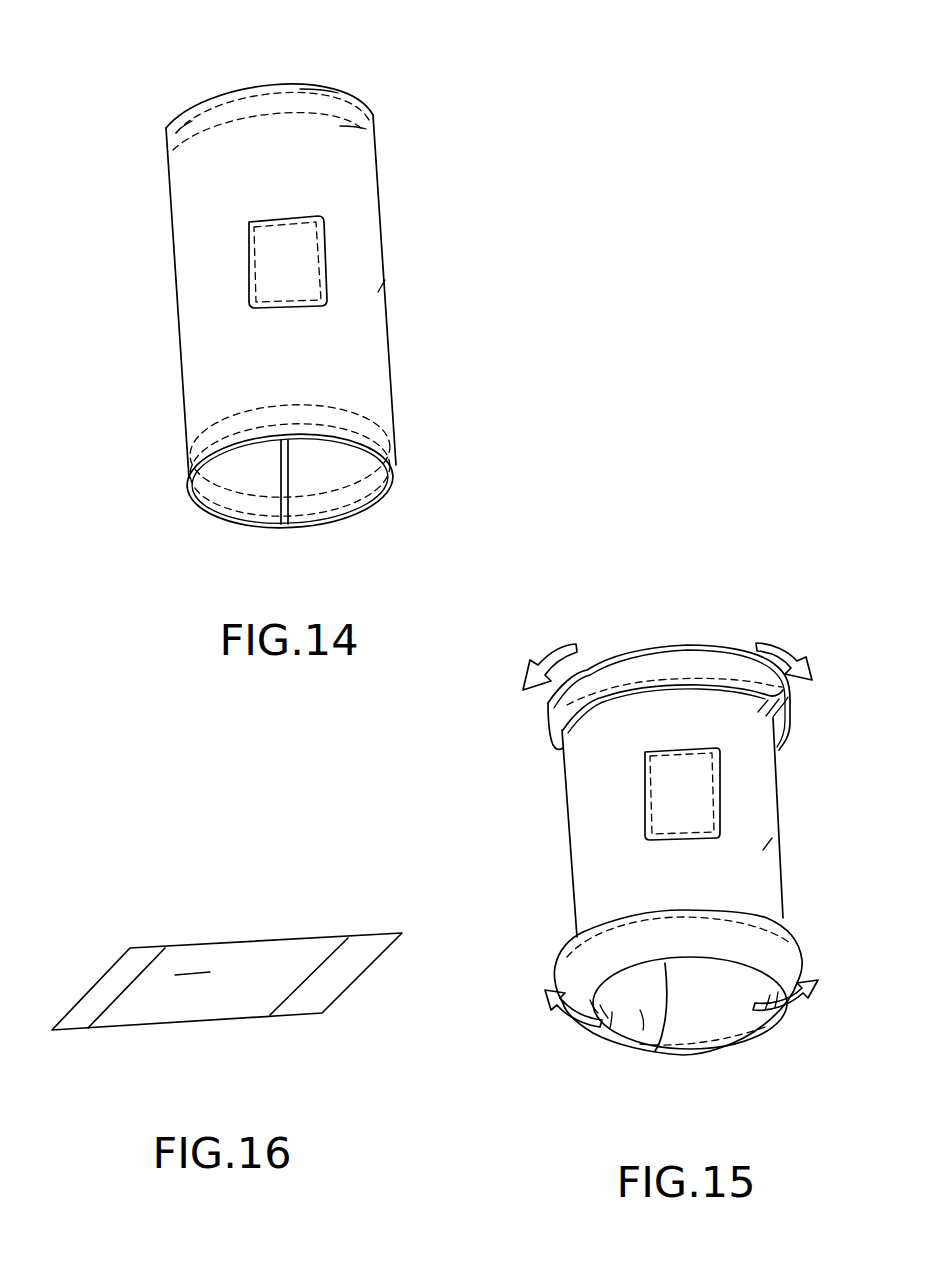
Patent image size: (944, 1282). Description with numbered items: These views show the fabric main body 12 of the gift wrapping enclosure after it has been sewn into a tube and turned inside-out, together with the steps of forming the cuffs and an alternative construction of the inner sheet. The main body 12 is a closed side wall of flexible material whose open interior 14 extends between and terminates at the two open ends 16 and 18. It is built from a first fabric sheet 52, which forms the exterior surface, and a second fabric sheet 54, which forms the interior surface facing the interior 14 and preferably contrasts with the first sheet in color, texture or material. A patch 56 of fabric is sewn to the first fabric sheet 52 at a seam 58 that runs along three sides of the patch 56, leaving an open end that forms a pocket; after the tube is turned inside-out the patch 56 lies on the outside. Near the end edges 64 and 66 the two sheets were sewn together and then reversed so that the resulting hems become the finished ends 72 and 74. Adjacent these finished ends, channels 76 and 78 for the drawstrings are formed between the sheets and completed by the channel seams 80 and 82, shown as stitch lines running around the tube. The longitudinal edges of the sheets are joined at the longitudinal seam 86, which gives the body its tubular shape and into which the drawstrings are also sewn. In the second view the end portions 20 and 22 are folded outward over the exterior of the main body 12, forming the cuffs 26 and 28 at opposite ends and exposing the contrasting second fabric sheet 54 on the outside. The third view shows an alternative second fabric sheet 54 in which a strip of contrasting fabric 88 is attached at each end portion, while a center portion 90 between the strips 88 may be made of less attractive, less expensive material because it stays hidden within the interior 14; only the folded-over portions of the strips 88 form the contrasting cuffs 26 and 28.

In FIG. 14, the main body 12 is at (172, 276).
In FIG. 15, the main body 12 is at (564, 832).
In FIG. 14, the open interior 14 is at (243, 476).
In FIG. 15, the open interior 14 is at (635, 1017).
In FIG. 14, the open end 16 is at (257, 88).
In FIG. 14, the open end 18 is at (208, 503).
In FIG. 15, the end portion 20 is at (742, 675).
In FIG. 15, the end portion 22 is at (785, 955).
In FIG. 15, the cuff 26 is at (537, 714).
In FIG. 15, the cuff 28 is at (564, 939).
In FIG. 14, the first fabric sheet 52 is at (373, 273).
In FIG. 15, the first fabric sheet 52 is at (763, 830).
In FIG. 14, the second fabric sheet 54 is at (362, 467).
In FIG. 15, the second fabric sheet 54 is at (753, 1013).
In FIG. 16, the second fabric sheet 54 is at (248, 919).
In FIG. 14, the patch 56 is at (278, 238).
In FIG. 15, the patch 56 is at (672, 770).
In FIG. 14, the seam 58 is at (317, 244).
In FIG. 15, the seam 58 is at (713, 790).
In FIG. 14, the end edge 64 is at (370, 440).
In FIG. 15, the end edge 64 is at (648, 913).
In FIG. 14, the end edge 66 is at (363, 110).
In FIG. 15, the end edge 66 is at (598, 697).
In FIG. 14, the finished end 72 is at (373, 505).
In FIG. 15, the finished end 72 is at (740, 1040).
In FIG. 14, the finished end 74 is at (332, 91).
In FIG. 15, the finished end 74 is at (718, 667).
In FIG. 14, the channel 76 is at (212, 438).
In FIG. 15, the channel 76 is at (582, 985).
In FIG. 14, the channel 78 is at (177, 132).
In FIG. 15, the channel 78 is at (588, 673).
In FIG. 14, the channel seam 80 is at (360, 413).
In FIG. 15, the channel seam 80 is at (750, 937).
In FIG. 14, the channel seam 82 is at (365, 128).
In FIG. 15, the channel seam 82 is at (772, 683).
In FIG. 14, the longitudinal seam 86 is at (288, 451).
In FIG. 15, the longitudinal seam 86 is at (668, 987).
In FIG. 16, the fabric strip 88 is at (97, 1000).
In FIG. 16, the center portion 90 is at (160, 1005).